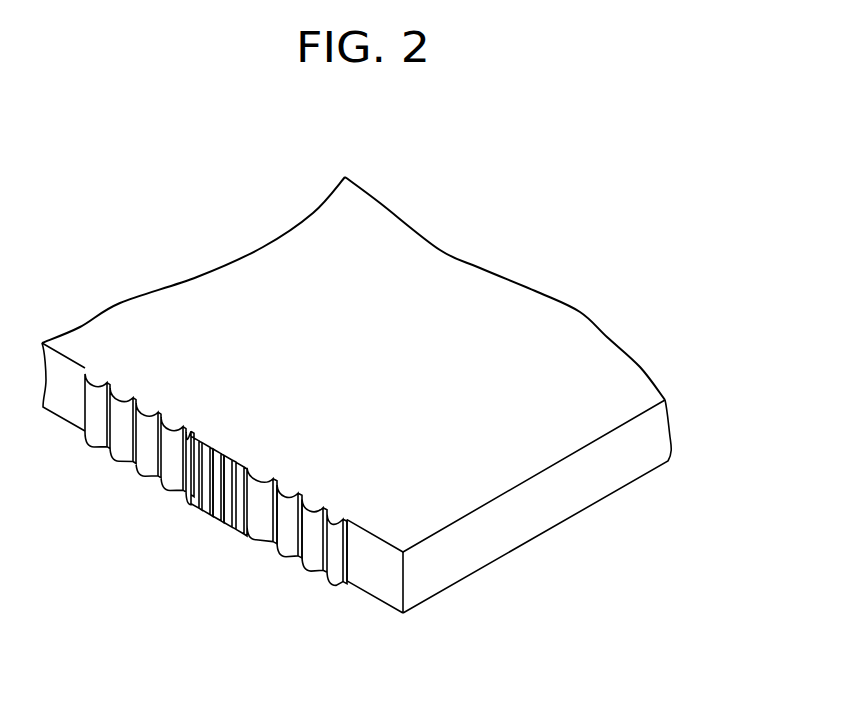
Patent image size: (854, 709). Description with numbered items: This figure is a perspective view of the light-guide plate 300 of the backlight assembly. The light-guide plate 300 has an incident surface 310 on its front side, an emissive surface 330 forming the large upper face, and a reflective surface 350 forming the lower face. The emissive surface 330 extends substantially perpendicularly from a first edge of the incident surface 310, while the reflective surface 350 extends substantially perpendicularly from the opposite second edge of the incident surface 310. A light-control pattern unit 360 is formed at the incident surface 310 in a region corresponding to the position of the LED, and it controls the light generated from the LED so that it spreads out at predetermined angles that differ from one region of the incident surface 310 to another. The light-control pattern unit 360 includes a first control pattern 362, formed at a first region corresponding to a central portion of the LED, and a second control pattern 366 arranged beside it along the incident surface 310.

The light-guide plate 300 is at (356, 427).
The incident surface 310 is at (370, 582).
The emissive surface 330 is at (510, 325).
The reflective surface 350 is at (450, 590).
The light-control pattern unit 360 is at (216, 401).
The first control pattern 362 is at (213, 498).
The second control pattern 366 is at (285, 535).